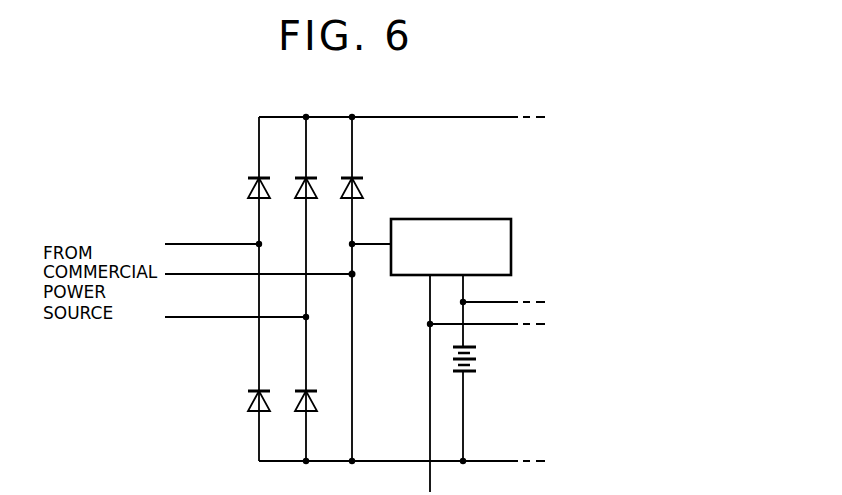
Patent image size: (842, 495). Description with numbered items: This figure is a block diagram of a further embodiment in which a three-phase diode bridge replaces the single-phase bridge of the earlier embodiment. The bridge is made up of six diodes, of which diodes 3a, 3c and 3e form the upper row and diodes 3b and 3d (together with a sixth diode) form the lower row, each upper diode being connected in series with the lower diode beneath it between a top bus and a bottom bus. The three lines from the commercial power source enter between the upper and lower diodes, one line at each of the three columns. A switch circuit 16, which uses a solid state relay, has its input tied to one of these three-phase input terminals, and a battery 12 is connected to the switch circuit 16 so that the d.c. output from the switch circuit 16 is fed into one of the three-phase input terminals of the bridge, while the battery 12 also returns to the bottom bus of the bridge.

The diode 3a is at (250, 190).
The diode 3b is at (250, 403).
The diode 3c is at (297, 190).
The diode 3d is at (405, 335).
The diode 3e is at (343, 190).
The switch circuit 16 is at (447, 219).
The battery 12 is at (480, 357).